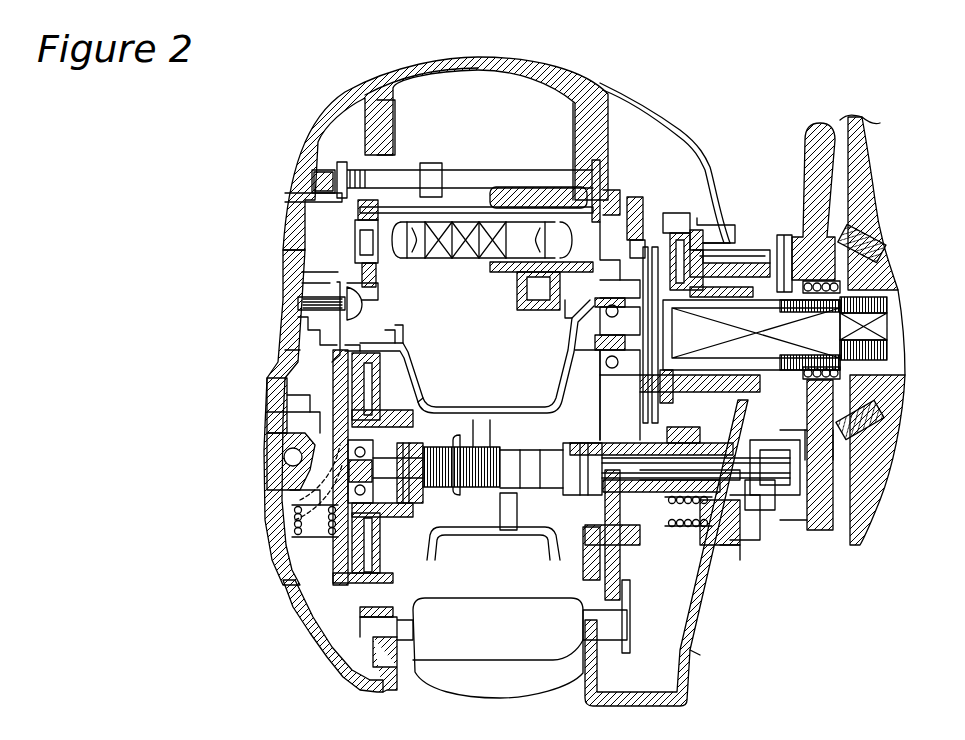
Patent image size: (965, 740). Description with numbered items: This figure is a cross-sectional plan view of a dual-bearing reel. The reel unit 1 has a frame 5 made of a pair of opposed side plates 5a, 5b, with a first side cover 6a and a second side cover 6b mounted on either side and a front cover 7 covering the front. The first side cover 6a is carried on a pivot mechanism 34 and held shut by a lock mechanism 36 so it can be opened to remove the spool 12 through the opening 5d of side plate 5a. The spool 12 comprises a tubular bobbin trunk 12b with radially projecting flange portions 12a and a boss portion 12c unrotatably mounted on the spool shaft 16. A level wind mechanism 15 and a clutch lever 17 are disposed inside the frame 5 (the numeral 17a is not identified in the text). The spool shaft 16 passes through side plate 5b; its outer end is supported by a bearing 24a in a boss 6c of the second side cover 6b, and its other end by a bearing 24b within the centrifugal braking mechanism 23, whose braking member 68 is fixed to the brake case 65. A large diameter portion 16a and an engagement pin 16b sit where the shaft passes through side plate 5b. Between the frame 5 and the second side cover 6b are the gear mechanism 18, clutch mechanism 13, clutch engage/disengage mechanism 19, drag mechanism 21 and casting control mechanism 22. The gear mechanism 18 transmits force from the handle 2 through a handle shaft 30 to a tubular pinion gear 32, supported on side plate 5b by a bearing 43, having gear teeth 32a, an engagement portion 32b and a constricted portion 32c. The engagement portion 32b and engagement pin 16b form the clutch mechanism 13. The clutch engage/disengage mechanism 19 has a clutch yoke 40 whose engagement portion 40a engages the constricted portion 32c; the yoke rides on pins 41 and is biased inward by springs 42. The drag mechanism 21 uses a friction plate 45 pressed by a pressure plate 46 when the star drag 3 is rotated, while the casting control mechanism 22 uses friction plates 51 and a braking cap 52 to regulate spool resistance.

The reel unit 1 is at (535, 68).
The handle 2 is at (873, 183).
The star drag 3 is at (830, 143).
The frame 5 is at (638, 103).
The side plate 5a is at (388, 308).
The side plate 5b is at (616, 208).
The opening 5d is at (390, 360).
The first side cover 6a is at (291, 280).
The second side cover 6b is at (685, 188).
The boss 6c is at (756, 521).
The front cover 7 is at (475, 76).
The spool 12 is at (485, 415).
The flange portion 12a is at (438, 385).
The tubular bobbin trunk 12b is at (438, 418).
The boss portion 12c is at (480, 456).
The clutch mechanism 13 is at (538, 415).
The level wind mechanism 15 is at (485, 215).
The spool shaft 16 is at (528, 535).
The large diameter portion 16a is at (445, 475).
The engagement pin 16b is at (585, 495).
The clutch lever 17 is at (468, 628).
The thumb rest mount 17a is at (638, 633).
The gear mechanism 18 is at (681, 190).
The clutch engage/disengage mechanism 19 is at (666, 553).
The drag mechanism 21 is at (713, 253).
The casting control mechanism 22 is at (758, 521).
The centrifugal braking mechanism 23 is at (273, 493).
The bearing 24a is at (813, 531).
The bearing 24b is at (278, 548).
The handle shaft 30 is at (794, 243).
The pinion gear 32 is at (708, 523).
The gear teeth 32a is at (743, 533).
The engagement portion 32b is at (522, 460).
The constricted portion 32c is at (688, 668).
The pivot mechanism 34 is at (521, 188).
The lock mechanism 36 is at (267, 424).
The clutch yoke 40 is at (684, 528).
The engagement portion 40a is at (651, 553).
The pin 41 is at (743, 508).
The spring 42 is at (690, 523).
The bearing 43 is at (589, 537).
The friction plate 45 is at (705, 226).
The pressure plate 46 is at (756, 326).
The friction plate 51 is at (270, 460).
The braking cap 52 is at (818, 458).
The brake case 65 is at (348, 645).
The braking member 68 is at (351, 595).